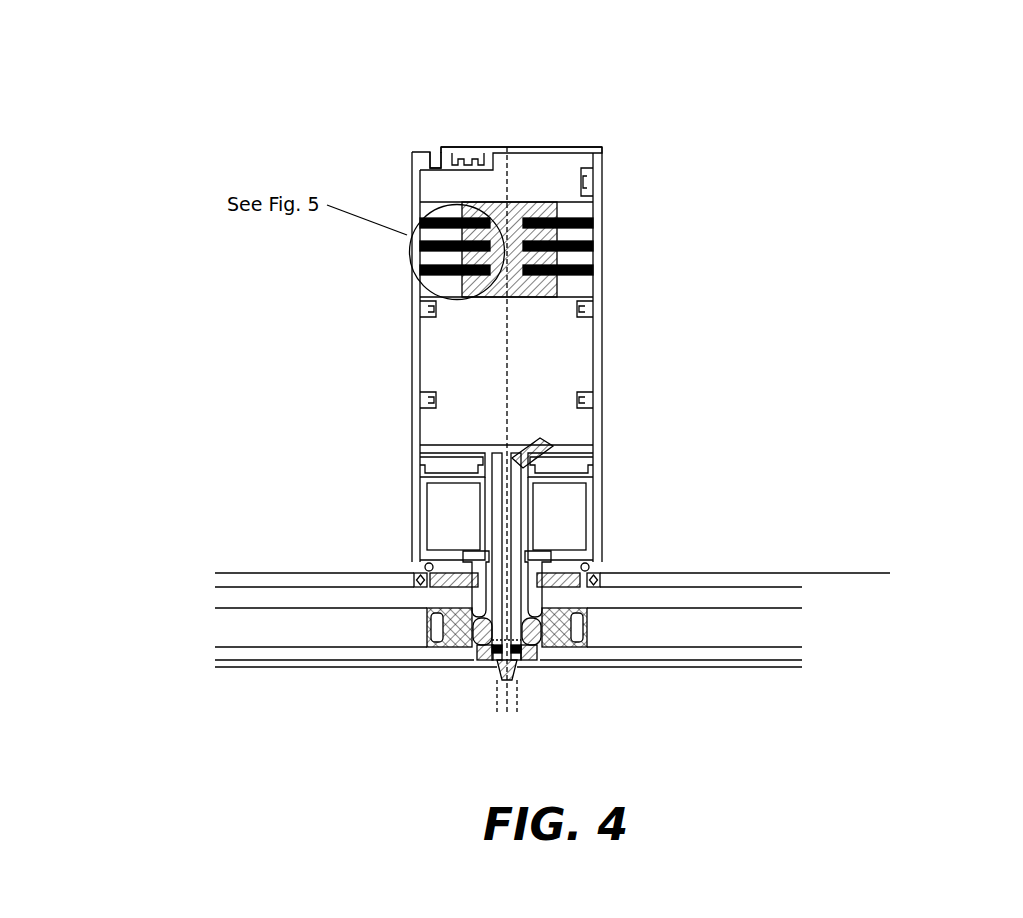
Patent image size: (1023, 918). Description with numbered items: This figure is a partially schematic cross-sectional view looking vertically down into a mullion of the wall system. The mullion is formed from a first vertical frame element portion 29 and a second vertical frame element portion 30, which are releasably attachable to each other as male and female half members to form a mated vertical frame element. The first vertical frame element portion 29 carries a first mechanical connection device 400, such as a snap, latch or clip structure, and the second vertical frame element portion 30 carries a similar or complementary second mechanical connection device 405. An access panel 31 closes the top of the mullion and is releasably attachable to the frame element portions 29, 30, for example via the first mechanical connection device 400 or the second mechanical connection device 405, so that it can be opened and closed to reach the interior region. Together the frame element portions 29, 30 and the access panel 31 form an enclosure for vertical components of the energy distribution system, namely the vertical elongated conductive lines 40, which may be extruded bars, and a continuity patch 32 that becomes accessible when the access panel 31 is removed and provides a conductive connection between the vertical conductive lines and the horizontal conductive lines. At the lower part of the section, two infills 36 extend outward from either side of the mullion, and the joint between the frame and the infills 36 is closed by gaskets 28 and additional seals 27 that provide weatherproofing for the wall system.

The access panel 31 is at (567, 145).
The first mechanical connection device 400 is at (418, 163).
The second mechanical connection device 405 is at (606, 185).
The continuity patch 32 is at (558, 200).
The vertical elongated conductive lines 40 is at (414, 244).
The first vertical frame element portion 29 is at (413, 297).
The second vertical frame element portion 30 is at (606, 396).
The gasket 28 is at (556, 447).
The additional seal 27 is at (457, 558).
The infill 36 is at (296, 668).